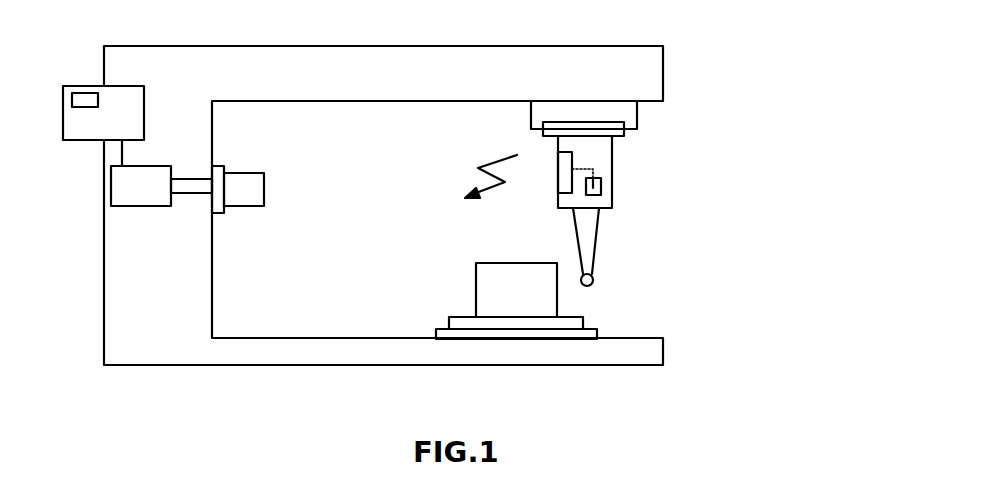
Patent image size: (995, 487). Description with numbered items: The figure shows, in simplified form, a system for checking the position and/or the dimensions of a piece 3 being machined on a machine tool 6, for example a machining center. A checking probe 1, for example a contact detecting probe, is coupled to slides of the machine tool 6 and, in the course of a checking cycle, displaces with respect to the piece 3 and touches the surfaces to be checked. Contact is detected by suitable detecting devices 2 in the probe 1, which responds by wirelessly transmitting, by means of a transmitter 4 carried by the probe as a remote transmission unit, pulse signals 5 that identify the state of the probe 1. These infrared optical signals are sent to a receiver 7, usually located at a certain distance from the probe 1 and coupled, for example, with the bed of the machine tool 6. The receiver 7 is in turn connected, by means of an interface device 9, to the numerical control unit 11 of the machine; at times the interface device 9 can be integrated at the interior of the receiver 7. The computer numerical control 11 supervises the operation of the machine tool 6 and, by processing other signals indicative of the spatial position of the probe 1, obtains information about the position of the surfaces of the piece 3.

The checking probe 1 is at (572, 152).
The detecting devices 2 is at (593, 195).
The piece 3 is at (498, 305).
The transmitter 4 is at (603, 142).
The pulse signals 5 is at (490, 165).
The machine tool 6 is at (155, 302).
The receiver 7 is at (250, 195).
The interface device 9 is at (143, 196).
The numerical control unit 11 is at (99, 116).